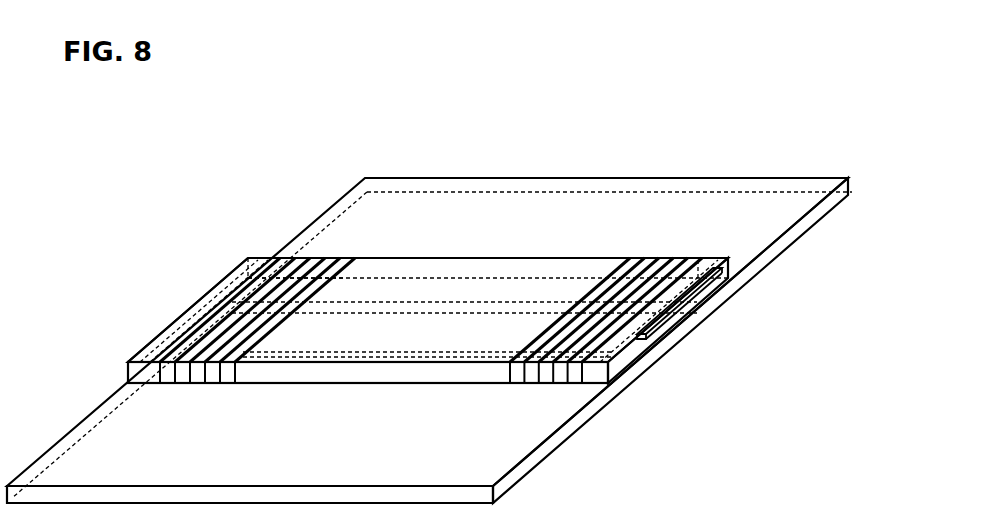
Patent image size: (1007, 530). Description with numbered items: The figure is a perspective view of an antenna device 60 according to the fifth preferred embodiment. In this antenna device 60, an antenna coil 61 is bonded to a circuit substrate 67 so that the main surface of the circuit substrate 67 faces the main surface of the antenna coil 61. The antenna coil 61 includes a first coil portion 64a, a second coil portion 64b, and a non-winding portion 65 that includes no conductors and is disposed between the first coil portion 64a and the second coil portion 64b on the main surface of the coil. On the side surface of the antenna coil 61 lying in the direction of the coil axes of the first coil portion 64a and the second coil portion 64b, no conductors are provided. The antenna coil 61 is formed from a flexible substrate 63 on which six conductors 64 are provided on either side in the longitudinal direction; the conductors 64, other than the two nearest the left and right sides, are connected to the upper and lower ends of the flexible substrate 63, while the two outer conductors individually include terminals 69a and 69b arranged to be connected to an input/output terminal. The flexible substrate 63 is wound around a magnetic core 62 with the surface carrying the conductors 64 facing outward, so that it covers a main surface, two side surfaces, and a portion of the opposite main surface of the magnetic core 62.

The antenna device 60 is at (114, 132).
The antenna coil 61 is at (357, 252).
The magnetic core 62 is at (645, 348).
The flexible substrate 63 is at (712, 298).
The conductors 64 is at (187, 350).
The first coil portion 64a is at (235, 390).
The second coil portion 64b is at (583, 390).
The non-winding portion 65 is at (478, 322).
The circuit substrate 67 is at (703, 218).
The terminal 69a is at (220, 296).
The terminal 69b is at (670, 310).